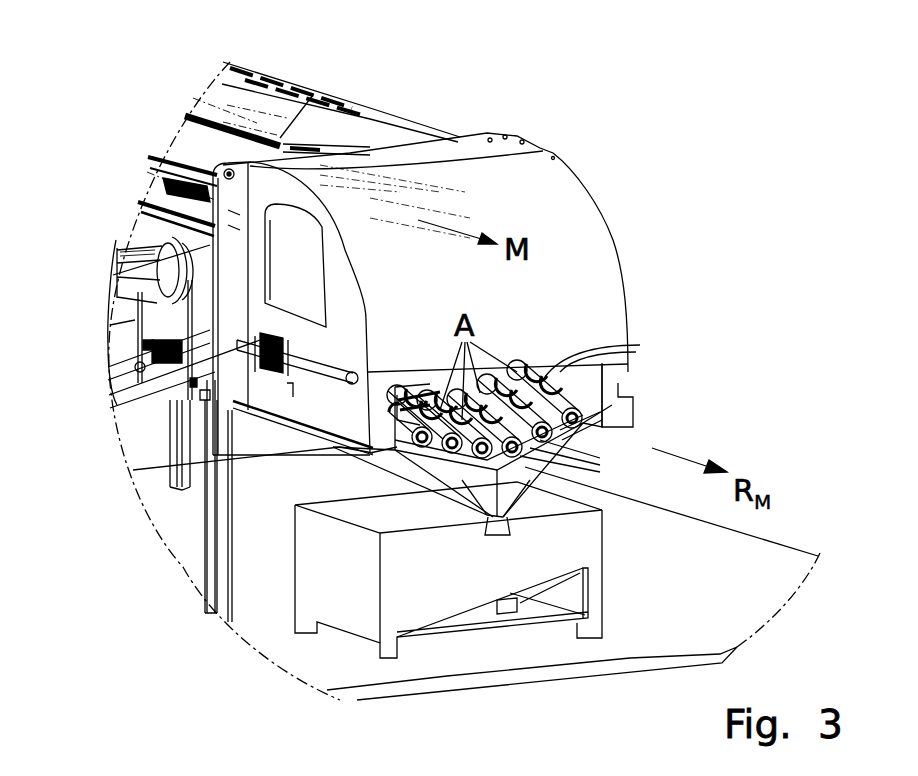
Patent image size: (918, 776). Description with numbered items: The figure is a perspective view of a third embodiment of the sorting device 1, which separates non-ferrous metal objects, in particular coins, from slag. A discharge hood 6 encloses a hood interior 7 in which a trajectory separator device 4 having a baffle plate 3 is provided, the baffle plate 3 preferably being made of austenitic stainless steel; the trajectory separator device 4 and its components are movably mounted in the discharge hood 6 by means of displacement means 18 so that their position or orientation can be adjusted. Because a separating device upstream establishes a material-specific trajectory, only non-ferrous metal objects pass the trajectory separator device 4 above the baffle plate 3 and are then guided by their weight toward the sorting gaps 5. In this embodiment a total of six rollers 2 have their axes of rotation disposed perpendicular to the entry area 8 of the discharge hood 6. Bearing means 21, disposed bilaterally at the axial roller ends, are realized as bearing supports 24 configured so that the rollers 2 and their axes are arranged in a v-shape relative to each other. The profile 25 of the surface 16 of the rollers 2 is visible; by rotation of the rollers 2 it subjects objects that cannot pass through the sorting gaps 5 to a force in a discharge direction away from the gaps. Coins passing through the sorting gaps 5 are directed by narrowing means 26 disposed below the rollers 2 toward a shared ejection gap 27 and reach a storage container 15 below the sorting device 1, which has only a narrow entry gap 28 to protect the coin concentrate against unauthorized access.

The sorting device 1 is at (588, 130).
The roller 2 is at (417, 390).
The baffle plate 3 is at (122, 380).
The trajectory separator device 4 is at (290, 242).
The sorting gap 5 is at (548, 440).
The discharge hood 6 is at (602, 210).
The hood interior 7 is at (273, 262).
The entry area 8 is at (377, 148).
The storage container 15 is at (350, 618).
The surface 16 is at (587, 348).
The displacement means 18 is at (292, 343).
The bearing means 21 is at (588, 408).
The bearing support 24 is at (396, 439).
The profile 25 is at (565, 388).
The narrowing means 26 is at (538, 468).
The ejection gap 27 is at (537, 488).
The entry gap 28 is at (475, 530).